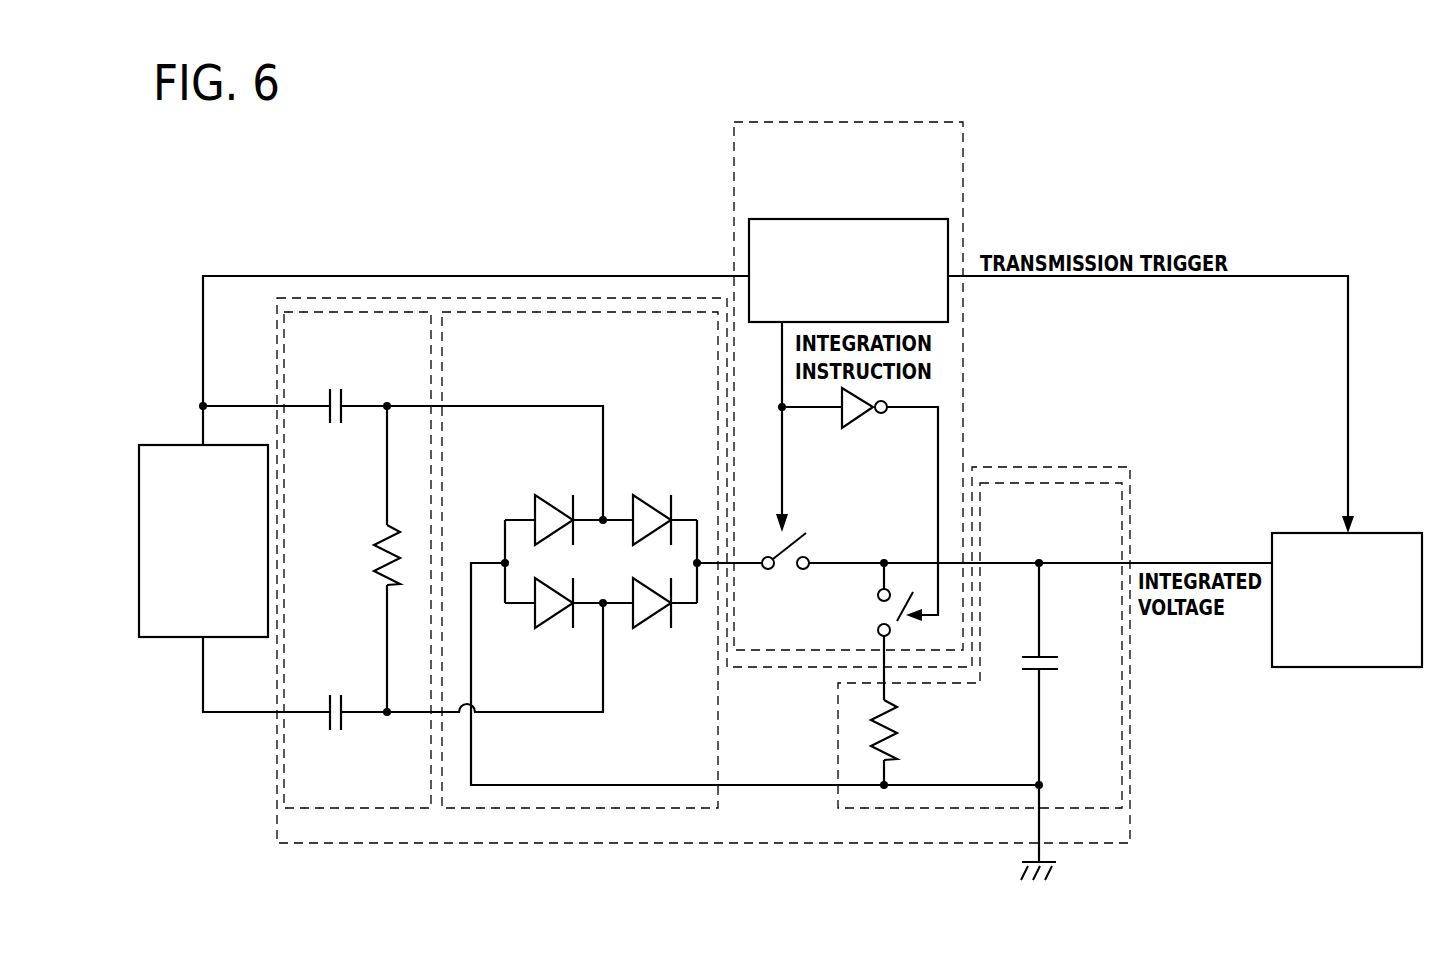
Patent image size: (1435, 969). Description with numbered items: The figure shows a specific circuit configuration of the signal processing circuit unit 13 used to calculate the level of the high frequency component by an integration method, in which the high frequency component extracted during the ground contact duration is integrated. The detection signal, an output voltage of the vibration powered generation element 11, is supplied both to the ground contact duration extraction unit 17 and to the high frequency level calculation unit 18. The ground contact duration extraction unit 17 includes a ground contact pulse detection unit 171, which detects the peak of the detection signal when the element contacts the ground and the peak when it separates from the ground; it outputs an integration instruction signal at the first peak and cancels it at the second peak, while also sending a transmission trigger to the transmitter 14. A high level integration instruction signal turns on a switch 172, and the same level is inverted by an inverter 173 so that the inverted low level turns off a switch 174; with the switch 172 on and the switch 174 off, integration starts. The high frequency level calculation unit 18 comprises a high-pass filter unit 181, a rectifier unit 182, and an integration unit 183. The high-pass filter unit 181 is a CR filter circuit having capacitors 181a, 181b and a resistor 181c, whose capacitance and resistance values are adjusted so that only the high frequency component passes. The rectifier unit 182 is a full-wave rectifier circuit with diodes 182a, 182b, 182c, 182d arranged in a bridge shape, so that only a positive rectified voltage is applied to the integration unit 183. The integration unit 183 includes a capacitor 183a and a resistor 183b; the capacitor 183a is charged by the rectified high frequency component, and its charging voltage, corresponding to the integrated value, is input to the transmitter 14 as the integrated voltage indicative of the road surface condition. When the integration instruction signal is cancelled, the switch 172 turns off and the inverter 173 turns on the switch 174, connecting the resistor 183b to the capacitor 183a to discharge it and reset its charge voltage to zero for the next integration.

The vibration powered generation element 11 is at (176, 444).
The signal processing circuit unit 13 is at (490, 222).
The transmitter 14 is at (1314, 532).
The ground contact duration extraction unit 17 is at (928, 120).
The ground contact pulse detection unit 171 is at (949, 222).
The switch 172 is at (800, 535).
The inverter 173 is at (866, 430).
The switch 174 is at (897, 615).
The high frequency level calculation unit 18 is at (318, 844).
The high-pass filter unit 181 is at (393, 312).
The capacitor 181a is at (334, 424).
The capacitor 181b is at (332, 696).
The resistor 181c is at (378, 548).
The rectifier unit 182 is at (660, 312).
The diode 182a is at (548, 496).
The diode 182b is at (648, 496).
The diode 182c is at (548, 628).
The diode 182d is at (652, 628).
The integration unit 183 is at (1122, 770).
The capacitor 183a is at (1045, 655).
The resistor 183b is at (890, 732).